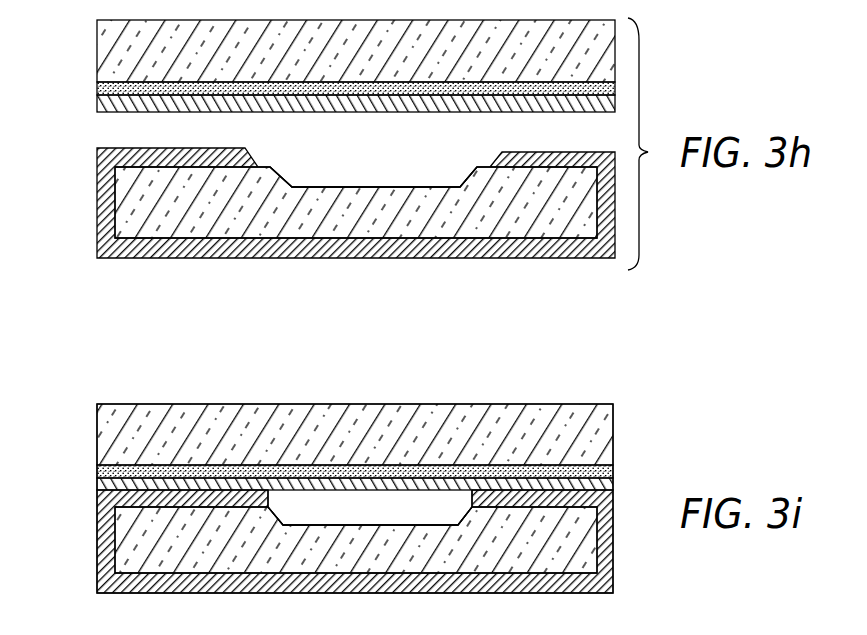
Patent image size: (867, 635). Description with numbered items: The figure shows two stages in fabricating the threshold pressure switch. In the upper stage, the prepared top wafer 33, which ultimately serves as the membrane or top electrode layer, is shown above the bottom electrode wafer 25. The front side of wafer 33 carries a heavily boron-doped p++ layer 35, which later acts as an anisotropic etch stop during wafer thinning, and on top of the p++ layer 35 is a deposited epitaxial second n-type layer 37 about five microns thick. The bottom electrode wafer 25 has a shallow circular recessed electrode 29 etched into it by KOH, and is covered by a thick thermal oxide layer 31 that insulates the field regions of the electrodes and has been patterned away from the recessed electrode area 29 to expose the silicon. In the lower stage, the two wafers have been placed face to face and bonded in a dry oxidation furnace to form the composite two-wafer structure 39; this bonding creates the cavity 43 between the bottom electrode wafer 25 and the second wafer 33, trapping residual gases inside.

In FIG. 3h, the bottom electrode wafer 25 is at (542, 219).
In FIG. 3i, the bottom electrode wafer 25 is at (545, 564).
In FIG. 3h, the recessed electrode 29 is at (397, 186).
In FIG. 3h, the thermal oxide layer 31 is at (99, 148).
In FIG. 3i, the thermal oxide layer 31 is at (97, 527).
In FIG. 3h, the wafer 33 is at (375, 66).
In FIG. 3i, the wafer 33 is at (382, 454).
In FIG. 3h, the p++ layer 35 is at (97, 85).
In FIG. 3i, the p++ layer 35 is at (97, 468).
In FIG. 3h, the second n-type layer 37 is at (97, 102).
In FIG. 3i, the second n-type layer 37 is at (97, 482).
In FIG. 3i, the composite two-wafer structure 39 is at (89, 433).
In FIG. 3i, the cavity 43 is at (382, 522).